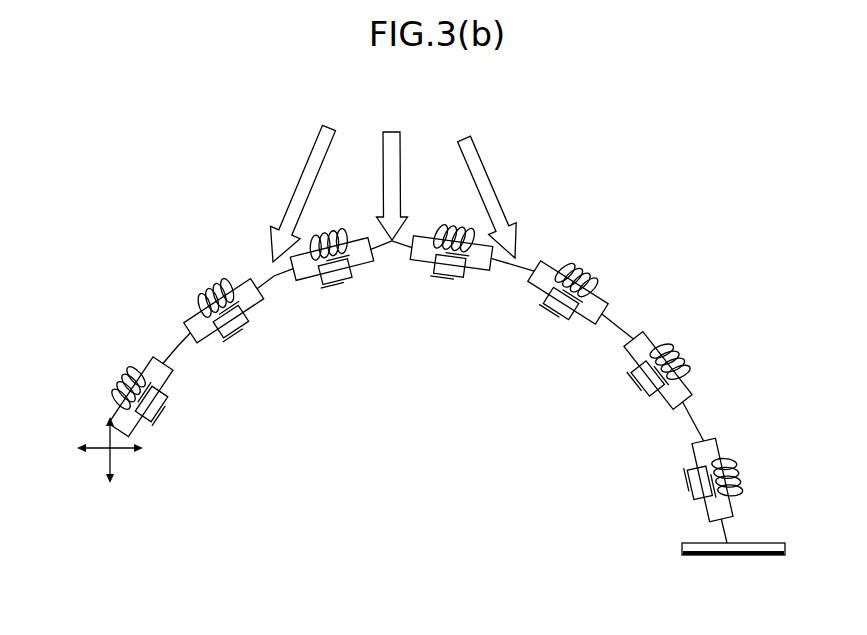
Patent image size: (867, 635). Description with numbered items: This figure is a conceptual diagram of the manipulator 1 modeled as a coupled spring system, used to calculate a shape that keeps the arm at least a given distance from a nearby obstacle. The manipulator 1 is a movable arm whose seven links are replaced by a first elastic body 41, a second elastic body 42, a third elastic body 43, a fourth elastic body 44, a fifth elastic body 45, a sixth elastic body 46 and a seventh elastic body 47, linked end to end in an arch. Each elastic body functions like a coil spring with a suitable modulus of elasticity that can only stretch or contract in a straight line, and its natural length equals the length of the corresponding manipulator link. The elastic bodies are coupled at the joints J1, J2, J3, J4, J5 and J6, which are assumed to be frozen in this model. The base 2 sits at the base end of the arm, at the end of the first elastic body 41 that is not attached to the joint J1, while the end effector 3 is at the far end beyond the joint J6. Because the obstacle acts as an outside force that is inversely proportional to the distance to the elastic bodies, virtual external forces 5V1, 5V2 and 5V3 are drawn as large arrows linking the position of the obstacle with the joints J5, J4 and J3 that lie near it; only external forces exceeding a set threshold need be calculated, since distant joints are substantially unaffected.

The manipulator 1 is at (673, 298).
The base 2 is at (680, 548).
The end effector 3 is at (120, 457).
The first elastic body 41 is at (742, 473).
The second elastic body 42 is at (682, 355).
The third elastic body 43 is at (585, 270).
The fourth elastic body 44 is at (457, 232).
The fifth elastic body 45 is at (328, 230).
The sixth elastic body 46 is at (208, 292).
The seventh elastic body 47 is at (115, 385).
The joint J1 is at (692, 427).
The joint J2 is at (622, 330).
The joint J3 is at (518, 267).
The joint J4 is at (397, 250).
The joint J5 is at (277, 273).
The joint J6 is at (180, 350).
The virtual external force 5V1 is at (292, 195).
The virtual external force 5V2 is at (435, 148).
The virtual external force 5V3 is at (491, 187).